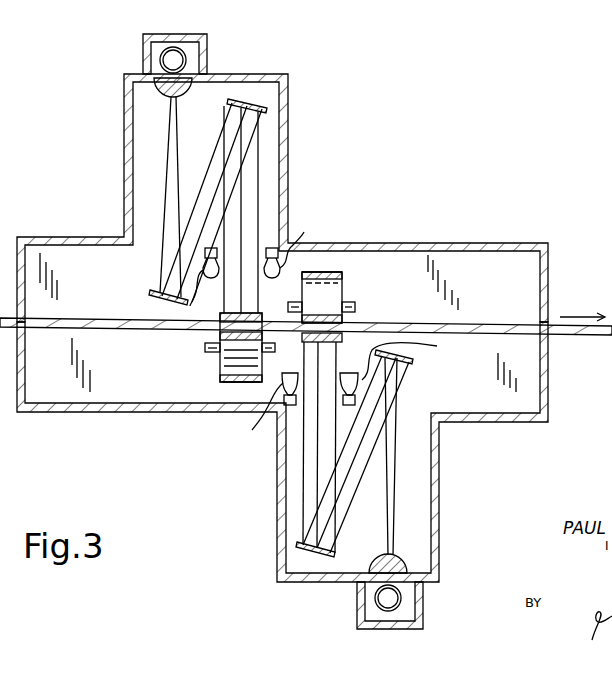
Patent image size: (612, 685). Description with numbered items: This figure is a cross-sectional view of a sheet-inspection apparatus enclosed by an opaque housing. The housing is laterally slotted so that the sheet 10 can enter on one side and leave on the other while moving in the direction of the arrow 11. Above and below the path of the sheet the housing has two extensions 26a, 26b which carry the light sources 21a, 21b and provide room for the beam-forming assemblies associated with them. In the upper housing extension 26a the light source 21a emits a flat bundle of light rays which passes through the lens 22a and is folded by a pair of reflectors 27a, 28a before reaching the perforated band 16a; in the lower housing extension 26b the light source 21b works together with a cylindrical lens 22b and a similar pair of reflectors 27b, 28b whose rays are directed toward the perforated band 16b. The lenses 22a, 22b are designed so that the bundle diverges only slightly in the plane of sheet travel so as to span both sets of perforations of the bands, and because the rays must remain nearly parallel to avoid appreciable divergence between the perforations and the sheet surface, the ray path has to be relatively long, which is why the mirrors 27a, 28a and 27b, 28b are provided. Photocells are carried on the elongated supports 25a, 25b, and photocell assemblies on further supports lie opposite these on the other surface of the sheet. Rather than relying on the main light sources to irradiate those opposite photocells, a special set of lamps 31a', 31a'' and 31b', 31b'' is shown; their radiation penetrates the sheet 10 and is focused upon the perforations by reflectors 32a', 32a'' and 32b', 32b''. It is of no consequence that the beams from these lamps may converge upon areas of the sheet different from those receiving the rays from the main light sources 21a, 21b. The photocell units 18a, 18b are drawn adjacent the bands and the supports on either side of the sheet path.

The sheet 10 is at (580, 340).
The arrow 11 is at (583, 316).
The perforated band 16a is at (222, 381).
The perforated band 16b is at (330, 272).
The photocell 18a is at (220, 361).
The photocell 18b is at (343, 283).
The light source 21a is at (110, 44).
The light source 21b is at (357, 607).
The lens 22a is at (152, 90).
The cylindrical lens 22b is at (410, 568).
The support 25a is at (218, 320).
The support 25b is at (336, 334).
The housing extension 26a is at (124, 201).
The housing extension 26b is at (440, 490).
The reflector 27a is at (150, 296).
The reflector 27b is at (297, 548).
The reflector 28a is at (268, 110).
The reflector 28b is at (414, 363).
The lamp 31a' is at (215, 276).
The lamp 31a'' is at (282, 276).
The lamp 31b' is at (286, 378).
The lamp 31b'' is at (361, 375).
The reflector 32a' is at (158, 297).
The reflector 32a'' is at (306, 240).
The reflector 32b' is at (252, 418).
The reflector 32b'' is at (422, 360).